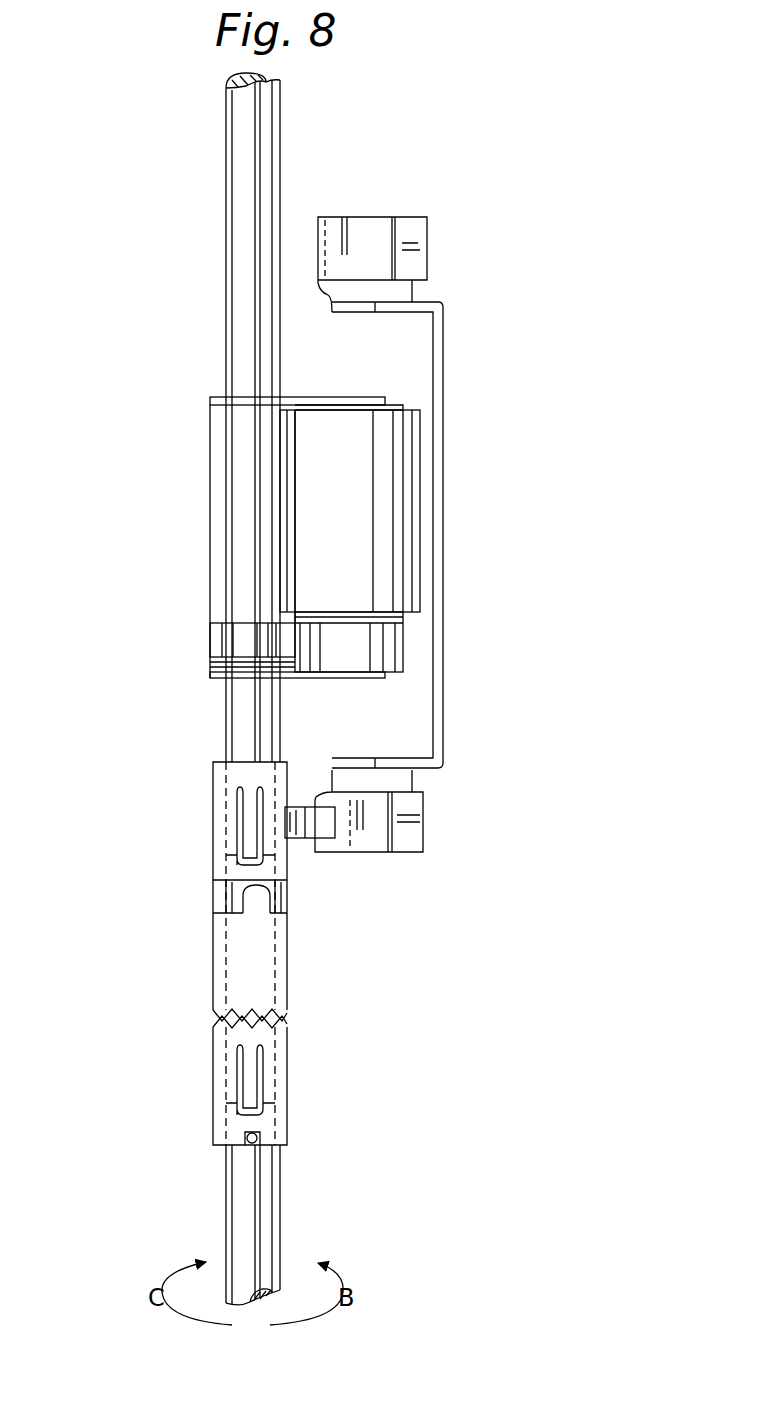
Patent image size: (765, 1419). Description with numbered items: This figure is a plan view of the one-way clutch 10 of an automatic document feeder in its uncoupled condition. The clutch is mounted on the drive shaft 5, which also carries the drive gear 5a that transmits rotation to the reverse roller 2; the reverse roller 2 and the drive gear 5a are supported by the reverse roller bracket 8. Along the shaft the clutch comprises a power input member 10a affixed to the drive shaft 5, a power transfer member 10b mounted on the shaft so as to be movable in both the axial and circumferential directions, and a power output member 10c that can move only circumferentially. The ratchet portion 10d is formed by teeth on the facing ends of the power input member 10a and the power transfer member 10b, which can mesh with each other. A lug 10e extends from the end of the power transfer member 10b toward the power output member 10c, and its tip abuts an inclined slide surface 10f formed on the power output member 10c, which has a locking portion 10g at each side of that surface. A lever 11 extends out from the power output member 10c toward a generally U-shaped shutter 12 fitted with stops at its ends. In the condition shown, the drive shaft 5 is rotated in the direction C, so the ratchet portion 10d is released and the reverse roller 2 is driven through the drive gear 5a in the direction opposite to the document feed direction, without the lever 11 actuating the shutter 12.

The reverse roller 2 is at (400, 438).
The drive shaft 5 is at (228, 195).
The drive gear 5a is at (210, 643).
The reverse roller bracket 8 is at (238, 397).
The one-way clutch 10 is at (245, 953).
The power input member 10a is at (283, 1100).
The power transfer member 10b is at (213, 985).
The power output member 10c is at (213, 780).
The ratchet portion 10d is at (292, 1018).
The lug 10e is at (250, 903).
The slide surface 10f is at (213, 888).
The locking portion 10g is at (213, 912).
The lever 11 is at (322, 827).
The shutter 12 is at (443, 680).